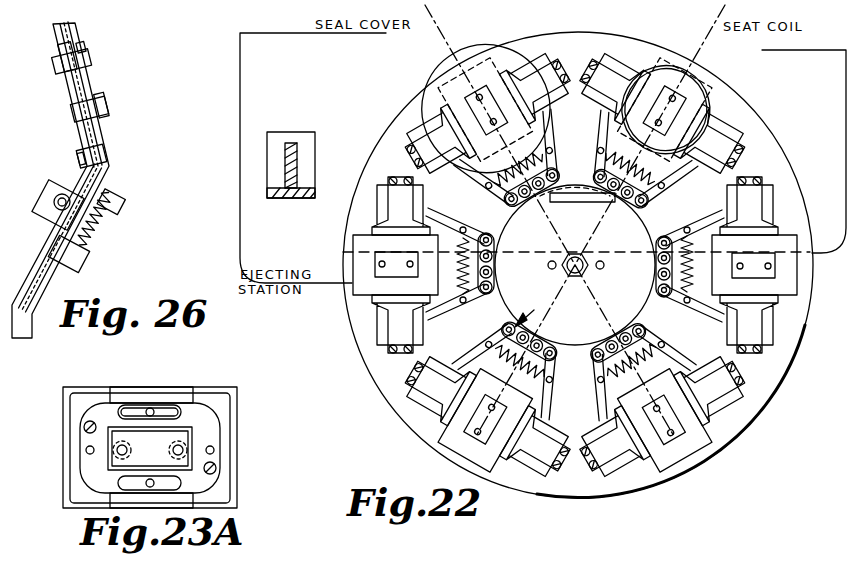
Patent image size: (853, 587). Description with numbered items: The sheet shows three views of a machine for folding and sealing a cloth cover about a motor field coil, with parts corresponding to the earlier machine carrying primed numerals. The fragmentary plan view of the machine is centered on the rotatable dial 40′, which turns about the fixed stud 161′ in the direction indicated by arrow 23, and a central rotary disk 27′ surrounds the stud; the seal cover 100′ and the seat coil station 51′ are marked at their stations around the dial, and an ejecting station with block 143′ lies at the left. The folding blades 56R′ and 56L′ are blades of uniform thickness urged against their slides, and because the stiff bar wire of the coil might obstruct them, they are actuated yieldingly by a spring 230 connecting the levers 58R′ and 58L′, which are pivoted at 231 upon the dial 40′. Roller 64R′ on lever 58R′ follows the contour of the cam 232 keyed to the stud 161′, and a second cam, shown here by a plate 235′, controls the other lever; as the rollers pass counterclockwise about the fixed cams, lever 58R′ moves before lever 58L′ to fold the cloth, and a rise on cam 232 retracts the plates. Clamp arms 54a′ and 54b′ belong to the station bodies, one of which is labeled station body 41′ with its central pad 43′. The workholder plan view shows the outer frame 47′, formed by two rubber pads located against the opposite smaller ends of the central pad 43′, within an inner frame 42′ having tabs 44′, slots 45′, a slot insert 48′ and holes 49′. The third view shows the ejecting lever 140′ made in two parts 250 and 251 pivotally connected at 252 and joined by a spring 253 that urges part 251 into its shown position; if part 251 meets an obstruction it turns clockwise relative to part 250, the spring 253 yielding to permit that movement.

In FIG. 22, the dial 40′ is at (807, 285).
In FIG. 22, the rotary disk 27′ is at (575, 265).
In FIG. 22, the stud 161′ is at (586, 279).
In FIG. 22, the index plate 235′ is at (583, 204).
In FIG. 22, the rotation direction arrow 23 is at (530, 312).
In FIG. 22, the ejector block 143′ is at (300, 132).
In FIG. 22, the lever 58R′ is at (697, 305).
In FIG. 22, the lever 58L′ is at (590, 150).
In FIG. 22, the clamp arm 54a′ is at (575, 440).
In FIG. 22, the clamp arm 54b′ is at (384, 182).
In FIG. 22, the cam 232 is at (515, 228).
In FIG. 22, the pivot 231 is at (593, 182).
In FIG. 22, the spring 230 is at (505, 330).
In FIG. 22, the roller 64R′ is at (633, 210).
In FIG. 22, the seal cover 100′ is at (427, 106).
In FIG. 22, the seat coil / pin 51′ is at (666, 110).
In FIG. 23A, the seat coil / pin 51′ is at (126, 451).
In FIG. 22, the folding blade 56L′ is at (613, 60).
In FIG. 22, the folding blade 56R′ is at (723, 145).
In FIG. 22, the station body 41′ is at (676, 421).
In FIG. 23A, the station body 41′ is at (172, 397).
In FIG. 22, the pad 43′ is at (680, 437).
In FIG. 23A, the pad 43′ is at (165, 437).
In FIG. 23A, the pad 47′ is at (72, 418).
In FIG. 23A, the inner frame 42′ is at (237, 457).
In FIG. 23A, the tab 44′ is at (157, 392).
In FIG. 23A, the slot 45′ is at (118, 405).
In FIG. 23A, the slot insert 48′ is at (176, 410).
In FIG. 23A, the hole 49′ is at (148, 410).
In FIG. 26, the part of ejecting lever 250 is at (90, 133).
In FIG. 26, the ejecting lever 140′ is at (108, 164).
In FIG. 26, the pivot 252 is at (50, 201).
In FIG. 26, the spring 253 is at (104, 230).
In FIG. 26, the part of ejecting lever 251 is at (50, 270).